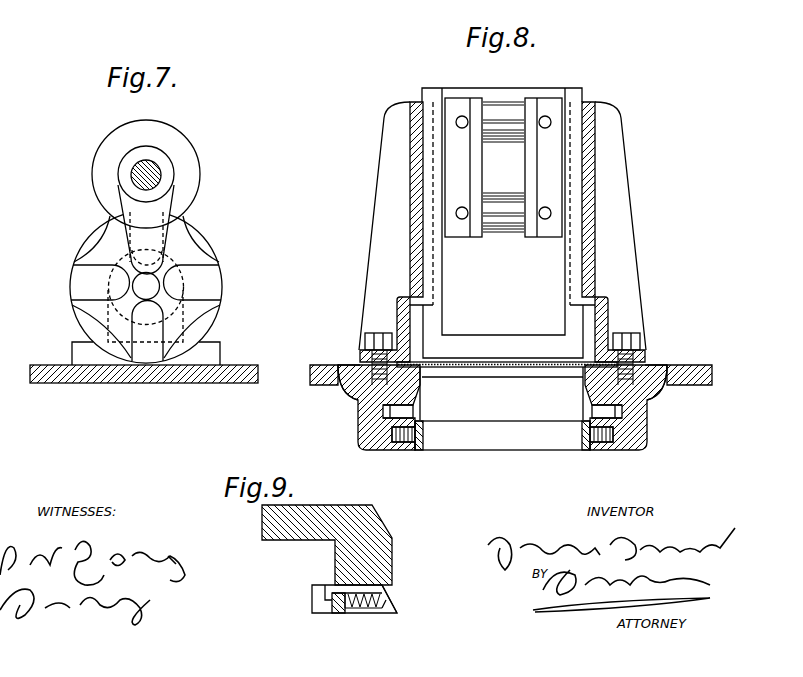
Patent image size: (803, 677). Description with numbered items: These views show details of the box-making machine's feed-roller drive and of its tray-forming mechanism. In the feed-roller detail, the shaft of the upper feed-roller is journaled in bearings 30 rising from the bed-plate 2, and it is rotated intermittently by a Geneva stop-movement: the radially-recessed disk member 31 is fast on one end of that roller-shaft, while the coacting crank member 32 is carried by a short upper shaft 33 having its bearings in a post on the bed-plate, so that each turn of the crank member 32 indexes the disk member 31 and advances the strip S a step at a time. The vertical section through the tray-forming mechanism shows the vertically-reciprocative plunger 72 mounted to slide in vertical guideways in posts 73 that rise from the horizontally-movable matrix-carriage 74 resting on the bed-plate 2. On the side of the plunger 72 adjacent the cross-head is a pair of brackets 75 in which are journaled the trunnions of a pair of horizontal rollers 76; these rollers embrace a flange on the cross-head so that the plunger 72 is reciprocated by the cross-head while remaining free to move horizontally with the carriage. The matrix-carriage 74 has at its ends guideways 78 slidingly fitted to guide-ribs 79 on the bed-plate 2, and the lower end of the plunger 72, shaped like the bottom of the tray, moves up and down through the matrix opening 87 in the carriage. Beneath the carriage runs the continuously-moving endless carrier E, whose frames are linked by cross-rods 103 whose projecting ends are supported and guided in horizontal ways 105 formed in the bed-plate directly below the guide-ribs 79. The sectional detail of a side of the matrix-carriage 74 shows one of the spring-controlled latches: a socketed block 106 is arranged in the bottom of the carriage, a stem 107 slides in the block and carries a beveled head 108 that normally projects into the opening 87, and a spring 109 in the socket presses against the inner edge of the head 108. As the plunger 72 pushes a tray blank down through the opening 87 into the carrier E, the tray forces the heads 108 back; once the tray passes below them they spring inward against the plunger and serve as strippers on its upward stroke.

In FIG. 7, the bearings 30 is at (82, 347).
In FIG. 7, the radially-recessed disk member 31 is at (82, 286).
In FIG. 7, the crank member 32 is at (157, 192).
In FIG. 7, the upper shaft 33 is at (131, 175).
In FIG. 8, the bed-plate 2 is at (676, 366).
In FIG. 8, the plunger 72 is at (503, 223).
In FIG. 8, the posts 73 is at (381, 225).
In FIG. 8, the matrix-carriage 74 is at (356, 395).
In FIG. 9, the matrix-carriage 74 is at (263, 538).
In FIG. 8, the brackets 75 is at (545, 103).
In FIG. 8, the horizontal rollers 76 is at (502, 142).
In FIG. 8, the guideways 78 is at (652, 405).
In FIG. 8, the guide-ribs 79 is at (352, 387).
In FIG. 8, the matrix opening 87 is at (548, 398).
In FIG. 8, the cross-rods 103 is at (594, 446).
In FIG. 8, the horizontal ways 105 is at (398, 451).
In FIG. 9, the socketed blocks 106 is at (320, 605).
In FIG. 9, the stems 107 is at (363, 589).
In FIG. 8, the beveled heads 108 is at (418, 412).
In FIG. 9, the beveled heads 108 is at (397, 606).
In FIG. 9, the springs 109 is at (358, 613).
In FIG. 8, the strip S is at (508, 361).
In FIG. 8, the endless carrier E is at (478, 441).